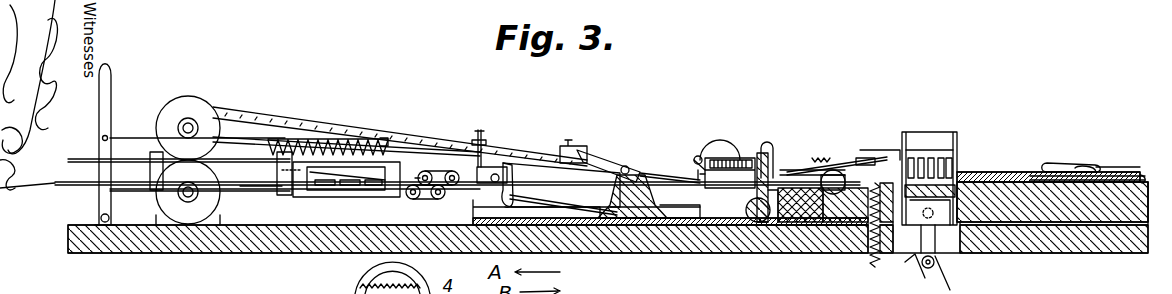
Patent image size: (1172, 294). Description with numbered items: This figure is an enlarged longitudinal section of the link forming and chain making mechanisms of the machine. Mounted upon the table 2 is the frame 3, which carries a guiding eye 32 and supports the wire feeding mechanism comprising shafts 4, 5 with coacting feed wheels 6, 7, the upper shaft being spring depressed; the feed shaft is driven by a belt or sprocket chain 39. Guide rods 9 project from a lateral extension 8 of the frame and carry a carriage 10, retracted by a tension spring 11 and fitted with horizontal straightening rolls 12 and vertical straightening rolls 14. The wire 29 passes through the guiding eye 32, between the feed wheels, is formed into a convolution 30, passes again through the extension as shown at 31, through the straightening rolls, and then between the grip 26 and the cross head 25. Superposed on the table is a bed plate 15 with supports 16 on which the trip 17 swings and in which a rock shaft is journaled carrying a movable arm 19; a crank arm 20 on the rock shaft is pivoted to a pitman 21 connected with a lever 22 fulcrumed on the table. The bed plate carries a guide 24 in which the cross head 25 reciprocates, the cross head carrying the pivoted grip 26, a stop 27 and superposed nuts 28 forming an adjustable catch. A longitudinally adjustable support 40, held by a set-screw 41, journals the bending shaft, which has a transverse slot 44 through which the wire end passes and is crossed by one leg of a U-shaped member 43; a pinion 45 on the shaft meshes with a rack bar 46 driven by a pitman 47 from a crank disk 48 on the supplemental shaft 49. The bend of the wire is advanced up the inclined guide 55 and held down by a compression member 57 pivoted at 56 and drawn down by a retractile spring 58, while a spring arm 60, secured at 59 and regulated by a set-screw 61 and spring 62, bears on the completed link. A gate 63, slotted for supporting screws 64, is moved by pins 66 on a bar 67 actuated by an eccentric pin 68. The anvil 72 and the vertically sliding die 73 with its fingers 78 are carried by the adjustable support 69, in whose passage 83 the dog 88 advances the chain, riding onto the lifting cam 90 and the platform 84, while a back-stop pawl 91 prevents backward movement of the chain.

The table 2 is at (240, 240).
The frame 3 is at (232, 191).
The shaft 4 is at (187, 123).
The shaft 5 is at (185, 198).
The feed wheel 6 is at (200, 106).
The feed wheel 7 is at (192, 214).
The lateral extension 8 is at (285, 195).
The guide rods 9 is at (340, 152).
The carriage 10 is at (366, 192).
The tension spring 11 is at (302, 142).
The horizontal straightening rolls 12 is at (330, 197).
The vertical straightening rolls 14 is at (423, 170).
The bed plate 15 is at (530, 208).
The supports 16 is at (509, 166).
The trip 17 is at (478, 195).
The movable member or arm 19 is at (484, 140).
The crank arm 20 is at (500, 167).
The pitman 21 is at (477, 130).
The lever 22 is at (99, 198).
The guide 24 is at (712, 218).
The cross head 25 is at (630, 220).
The grip 26 is at (600, 170).
The stop 27 is at (665, 175).
The superposed nuts 28 is at (595, 156).
The wire 29 is at (78, 158).
The convolution 30 is at (62, 184).
The wire extension 31 is at (264, 188).
The guiding eye 32 is at (153, 152).
The belt or sprocket chain 39 is at (567, 142).
The support 40 is at (732, 178).
The set-screw 41 is at (698, 208).
The U-shaped member 43 is at (767, 144).
The transverse slot 44 is at (775, 218).
The pinion 45 is at (766, 156).
The rack bar 46 is at (696, 156).
The pitman 47 is at (693, 160).
The crank disk 48 is at (712, 143).
The supplemental shaft 49 is at (732, 160).
The inclined guide 55 is at (906, 150).
The pivot 56 is at (838, 172).
The compression member 57 is at (868, 150).
The retractile spring 58 is at (876, 262).
The securing point 59 is at (793, 170).
The spring arm 60 is at (908, 160).
The set-screw 61 is at (843, 166).
The spring 62 is at (822, 158).
The gate 63 is at (780, 225).
The supporting screws 64 is at (770, 218).
The pins 66 is at (800, 215).
The bar 67 is at (840, 218).
The eccentric pin 68 is at (862, 158).
The support 69 is at (1128, 220).
The anvil 72 is at (940, 262).
The die 73 is at (950, 136).
The fingers 78 is at (950, 160).
The recess or passage 83 is at (1054, 163).
The platform 84 is at (1012, 172).
The dog 88 is at (1082, 168).
The lifting cam 90 is at (1112, 174).
The back-stop pawl 91 is at (1141, 174).